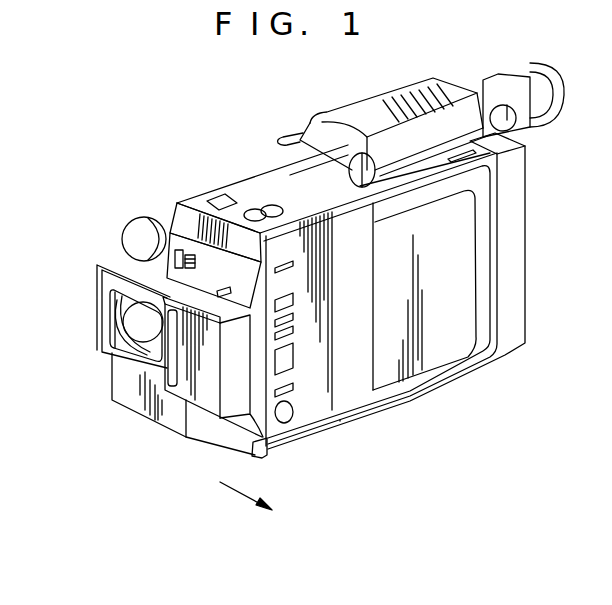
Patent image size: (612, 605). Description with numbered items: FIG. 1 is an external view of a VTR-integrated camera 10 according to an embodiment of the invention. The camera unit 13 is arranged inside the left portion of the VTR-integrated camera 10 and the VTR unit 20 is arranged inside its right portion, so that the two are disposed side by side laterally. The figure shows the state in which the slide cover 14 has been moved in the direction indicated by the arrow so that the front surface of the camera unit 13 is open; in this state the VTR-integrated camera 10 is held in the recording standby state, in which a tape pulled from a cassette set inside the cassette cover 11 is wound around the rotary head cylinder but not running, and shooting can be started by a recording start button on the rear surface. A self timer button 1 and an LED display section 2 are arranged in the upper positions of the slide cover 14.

The VTR-integrated camera 10 is at (223, 144).
The self timer button 1 is at (190, 252).
The LED display section 2 is at (137, 228).
The cassette cover 11 is at (423, 347).
The camera unit 13 is at (130, 308).
The slide cover 14 is at (187, 383).
The VTR unit 20 is at (353, 395).